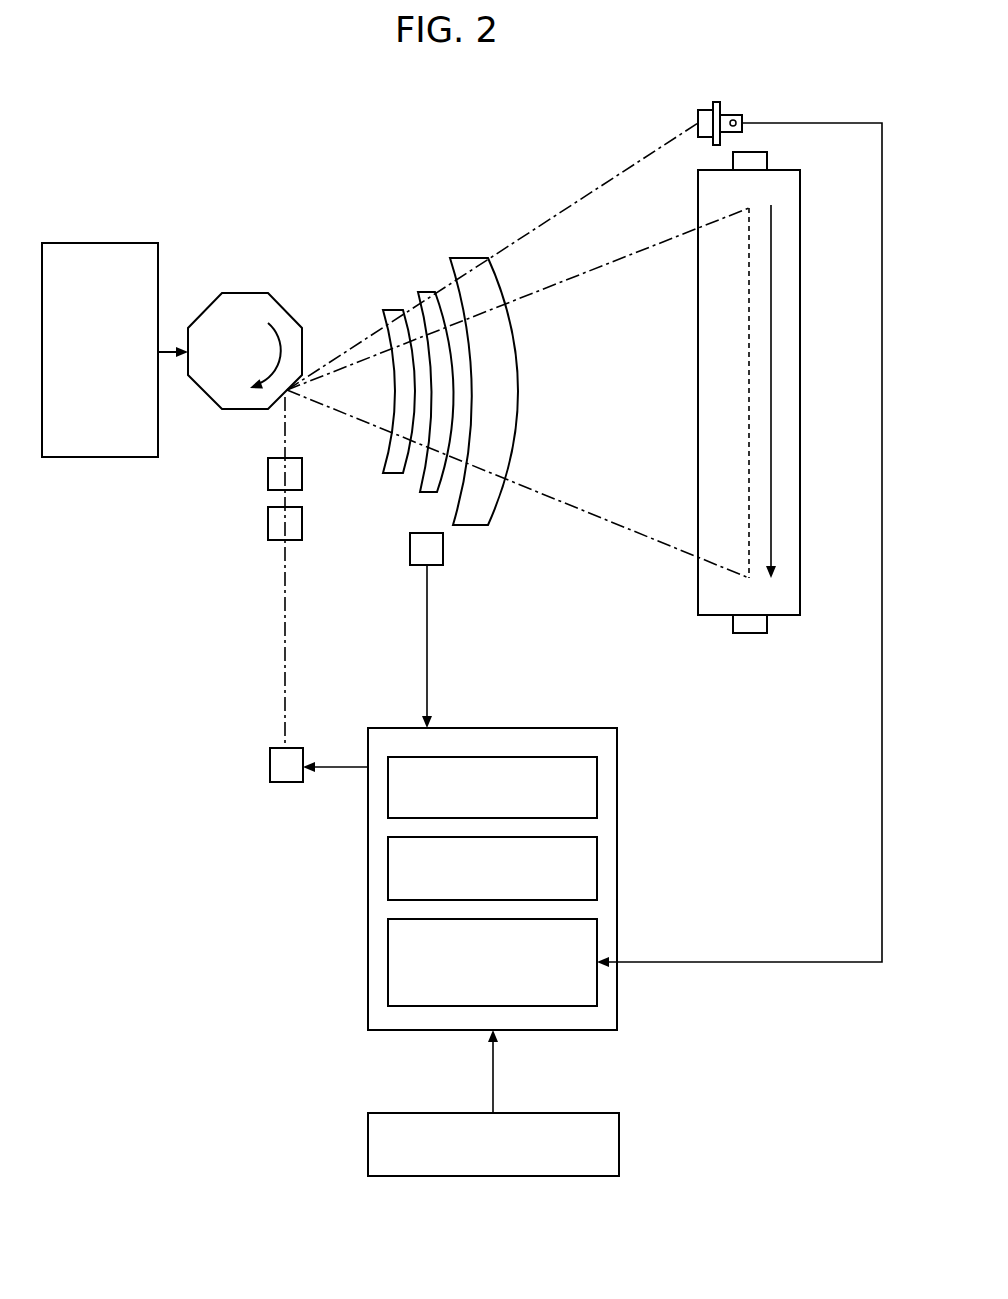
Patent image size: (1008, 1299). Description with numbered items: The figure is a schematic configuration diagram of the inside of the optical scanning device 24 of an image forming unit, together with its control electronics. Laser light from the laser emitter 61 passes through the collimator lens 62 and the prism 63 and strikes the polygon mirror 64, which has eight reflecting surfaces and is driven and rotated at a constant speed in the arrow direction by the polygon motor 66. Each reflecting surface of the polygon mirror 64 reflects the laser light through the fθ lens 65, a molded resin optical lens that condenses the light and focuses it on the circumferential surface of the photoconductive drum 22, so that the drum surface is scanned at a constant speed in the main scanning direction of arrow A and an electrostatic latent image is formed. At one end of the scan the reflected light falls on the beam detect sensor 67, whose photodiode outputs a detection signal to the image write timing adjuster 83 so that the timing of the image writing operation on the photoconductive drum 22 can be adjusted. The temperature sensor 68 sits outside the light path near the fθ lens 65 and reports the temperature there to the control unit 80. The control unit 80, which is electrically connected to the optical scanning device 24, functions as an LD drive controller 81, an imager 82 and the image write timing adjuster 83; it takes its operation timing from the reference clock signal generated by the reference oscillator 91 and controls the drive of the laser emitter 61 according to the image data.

The photoconductive drum 22 is at (800, 585).
The optical scanning device 24 is at (596, 120).
The laser emitter 61 is at (270, 762).
The collimator lens 62 is at (268, 520).
The prism 63 is at (268, 468).
The polygon mirror 64 is at (248, 293).
The fθ lens 65 is at (422, 235).
The polygon motor 66 is at (122, 243).
The beam detect sensor 67 is at (730, 115).
The temperature sensor 68 is at (410, 550).
The control unit 80 is at (593, 728).
The LD drive controller 81 is at (597, 793).
The imager 82 is at (598, 867).
The image write timing adjuster 83 is at (598, 922).
The reference oscillator 91 is at (619, 1125).